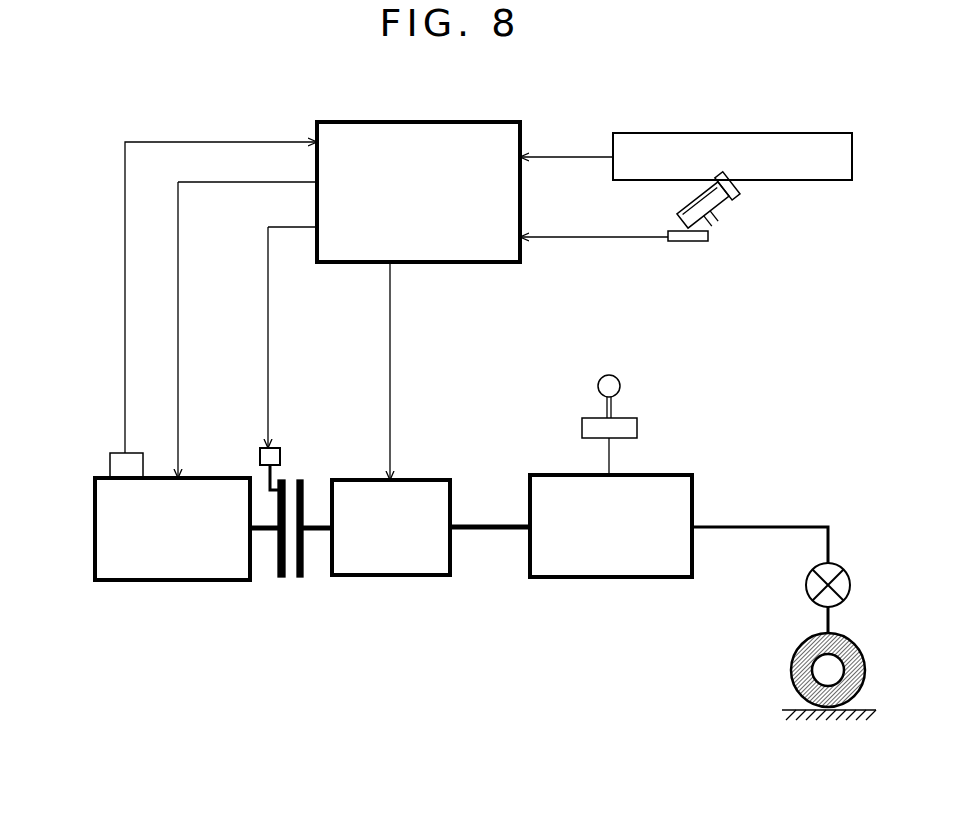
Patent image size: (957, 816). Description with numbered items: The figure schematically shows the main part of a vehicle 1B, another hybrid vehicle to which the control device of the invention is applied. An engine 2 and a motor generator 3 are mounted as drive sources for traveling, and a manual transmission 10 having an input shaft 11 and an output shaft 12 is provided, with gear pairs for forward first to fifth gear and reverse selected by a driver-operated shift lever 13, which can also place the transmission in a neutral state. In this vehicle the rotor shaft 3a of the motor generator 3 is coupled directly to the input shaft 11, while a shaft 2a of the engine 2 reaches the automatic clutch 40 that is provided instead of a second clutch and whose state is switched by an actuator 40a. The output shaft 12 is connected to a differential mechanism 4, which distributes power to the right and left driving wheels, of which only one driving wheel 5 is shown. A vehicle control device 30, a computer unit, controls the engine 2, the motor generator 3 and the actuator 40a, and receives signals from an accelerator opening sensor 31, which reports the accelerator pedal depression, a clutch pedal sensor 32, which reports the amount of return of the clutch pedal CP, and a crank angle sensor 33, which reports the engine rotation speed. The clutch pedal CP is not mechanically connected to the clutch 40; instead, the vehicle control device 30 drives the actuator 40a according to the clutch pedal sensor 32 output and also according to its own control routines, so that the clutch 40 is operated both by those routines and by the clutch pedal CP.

The vehicle 1B is at (80, 152).
The engine 2 is at (133, 580).
The engine output shaft 2a is at (270, 534).
The motor generator 3 is at (390, 575).
The rotor shaft 3a is at (315, 534).
The differential mechanism 4 is at (806, 598).
The driving wheel 5 is at (791, 672).
The manual transmission 10 is at (606, 578).
The input shaft 11 is at (498, 531).
The output shaft 12 is at (734, 530).
The shift lever 13 is at (615, 405).
The vehicle control device 30 is at (417, 122).
The accelerator opening sensor 31 is at (852, 152).
The clutch pedal sensor 32 is at (690, 242).
The crank angle sensor 33 is at (110, 470).
The clutch 40 is at (291, 585).
The actuator 40a is at (260, 456).
The clutch pedal CP is at (690, 196).